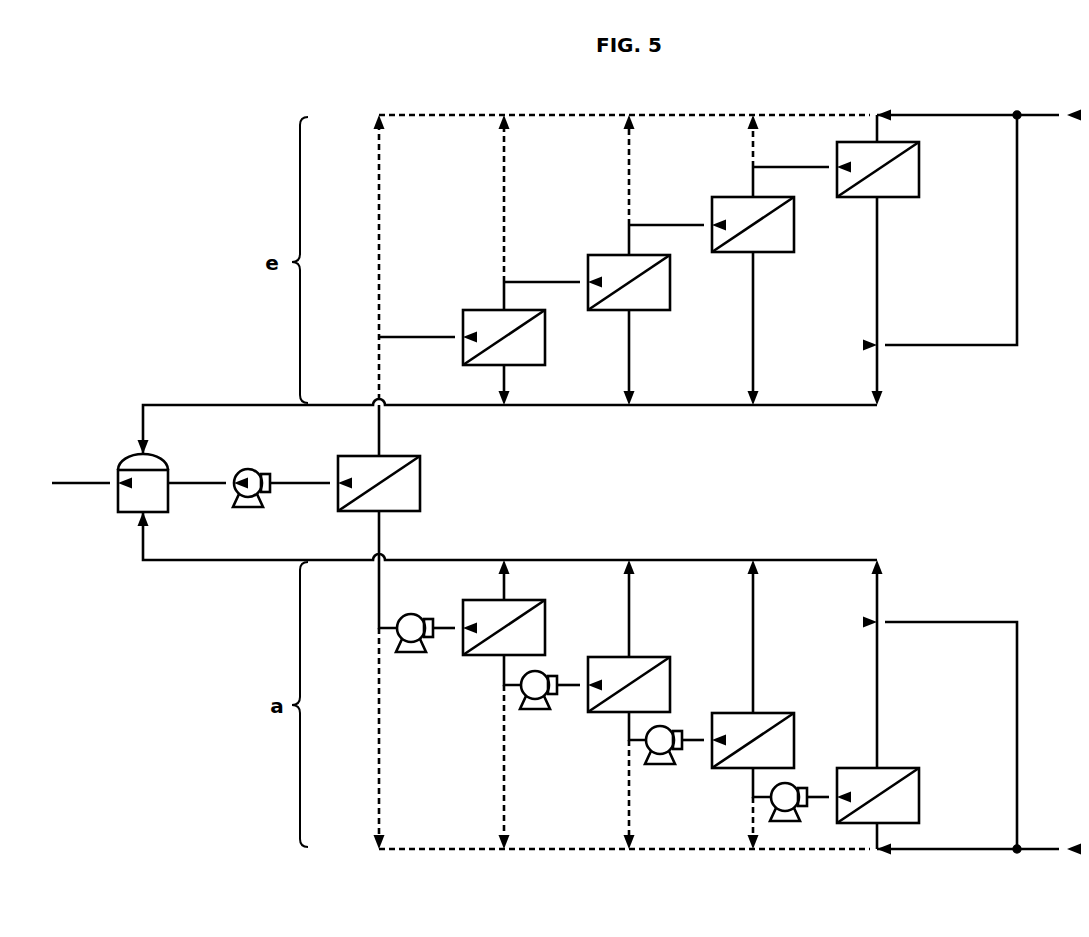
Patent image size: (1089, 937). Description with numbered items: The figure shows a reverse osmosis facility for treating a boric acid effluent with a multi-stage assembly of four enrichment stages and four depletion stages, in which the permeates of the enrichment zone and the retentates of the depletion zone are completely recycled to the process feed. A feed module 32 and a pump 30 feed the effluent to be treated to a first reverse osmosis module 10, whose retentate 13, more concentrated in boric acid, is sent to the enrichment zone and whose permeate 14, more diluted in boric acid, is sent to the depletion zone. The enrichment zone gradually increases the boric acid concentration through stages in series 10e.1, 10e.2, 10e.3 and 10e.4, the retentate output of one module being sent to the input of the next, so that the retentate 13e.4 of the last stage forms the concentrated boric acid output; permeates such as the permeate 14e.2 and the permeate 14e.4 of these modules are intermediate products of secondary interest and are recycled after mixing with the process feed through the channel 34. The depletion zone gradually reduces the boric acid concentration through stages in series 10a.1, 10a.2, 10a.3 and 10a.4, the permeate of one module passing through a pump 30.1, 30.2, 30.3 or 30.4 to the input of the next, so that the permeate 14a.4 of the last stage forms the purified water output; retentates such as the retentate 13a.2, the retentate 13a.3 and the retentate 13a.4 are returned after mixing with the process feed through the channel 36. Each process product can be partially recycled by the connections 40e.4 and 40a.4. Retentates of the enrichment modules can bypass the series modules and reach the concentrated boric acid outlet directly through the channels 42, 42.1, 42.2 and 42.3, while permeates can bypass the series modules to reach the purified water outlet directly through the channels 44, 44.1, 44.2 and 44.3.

The reverse osmosis module 10 is at (420, 480).
The retentate 13 is at (380, 437).
The permeate 14 is at (380, 530).
The pump 30 is at (252, 468).
The feed module 32 is at (116, 496).
The channel 34 is at (248, 405).
The channel 36 is at (248, 560).
The channel 42 is at (379, 230).
The channel 42.1 is at (504, 200).
The channel 42.2 is at (629, 175).
The channel 42.3 is at (753, 148).
The enrichment stage 10e.1 is at (545, 337).
The enrichment stage 10e.2 is at (670, 282).
The enrichment stage 10e.3 is at (795, 225).
The enrichment stage 10e.4 is at (918, 170).
The retentate of fourth enrichment stage 13e.4 is at (950, 113).
The permeate of second enrichment stage 14e.2 is at (629, 347).
The permeate of fourth enrichment stage 14e.4 is at (877, 270).
The channel 40e.4 is at (950, 346).
The channel 44 is at (379, 740).
The channel 44.1 is at (504, 765).
The channel 44.2 is at (629, 792).
The channel 44.3 is at (753, 815).
The pump 30.1 is at (421, 616).
The pump 30.2 is at (546, 672).
The pump 30.3 is at (671, 727).
The pump 30.4 is at (796, 785).
The depletion stage 10a.1 is at (545, 625).
The depletion stage 10a.2 is at (670, 680).
The depletion stage 10a.3 is at (795, 740).
The depletion stage 10a.4 is at (918, 795).
The retentate of second depletion stage 13a.2 is at (629, 615).
The retentate of third depletion stage 13a.3 is at (753, 637).
The retentate of fourth depletion stage 13a.4 is at (877, 695).
The channel 40a.4 is at (951, 621).
The permeate of fourth depletion stage 14a.4 is at (950, 850).